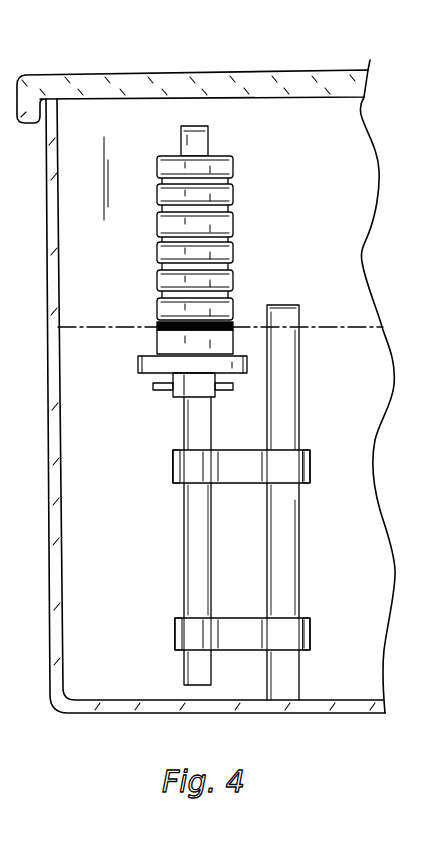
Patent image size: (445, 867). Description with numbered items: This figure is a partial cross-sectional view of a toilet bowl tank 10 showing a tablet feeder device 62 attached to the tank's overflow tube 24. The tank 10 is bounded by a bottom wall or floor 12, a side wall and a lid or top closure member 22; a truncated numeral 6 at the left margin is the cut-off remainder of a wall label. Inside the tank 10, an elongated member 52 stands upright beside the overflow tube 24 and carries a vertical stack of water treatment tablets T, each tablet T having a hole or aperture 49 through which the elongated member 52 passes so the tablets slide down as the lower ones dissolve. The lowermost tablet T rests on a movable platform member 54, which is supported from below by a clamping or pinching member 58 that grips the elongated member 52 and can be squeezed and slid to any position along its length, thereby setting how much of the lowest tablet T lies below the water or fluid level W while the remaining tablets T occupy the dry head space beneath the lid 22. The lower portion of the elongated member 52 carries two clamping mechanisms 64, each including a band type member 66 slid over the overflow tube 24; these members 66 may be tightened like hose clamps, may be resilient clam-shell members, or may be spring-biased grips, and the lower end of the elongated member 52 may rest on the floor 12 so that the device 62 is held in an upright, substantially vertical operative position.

The toilet bowl tank 10 is at (390, 178).
The bottom wall or floor 12 is at (110, 700).
The lid or top closure member 22 is at (207, 72).
The overflow tube 24 is at (299, 362).
The hole or aperture 49 is at (212, 253).
The elongated member 52 is at (184, 552).
The movable platform member 54 is at (137, 364).
The clamping or pinching member 58 is at (165, 401).
The tablet feeder device embodiment 62 is at (237, 240).
The clamping mechanisms 64 is at (165, 467).
The band type member 66 is at (310, 466).
The water treatment tablets T is at (233, 197).
The water or fluid level W is at (348, 568).
The side wall (partial numeral) 6 is at (192, 406).